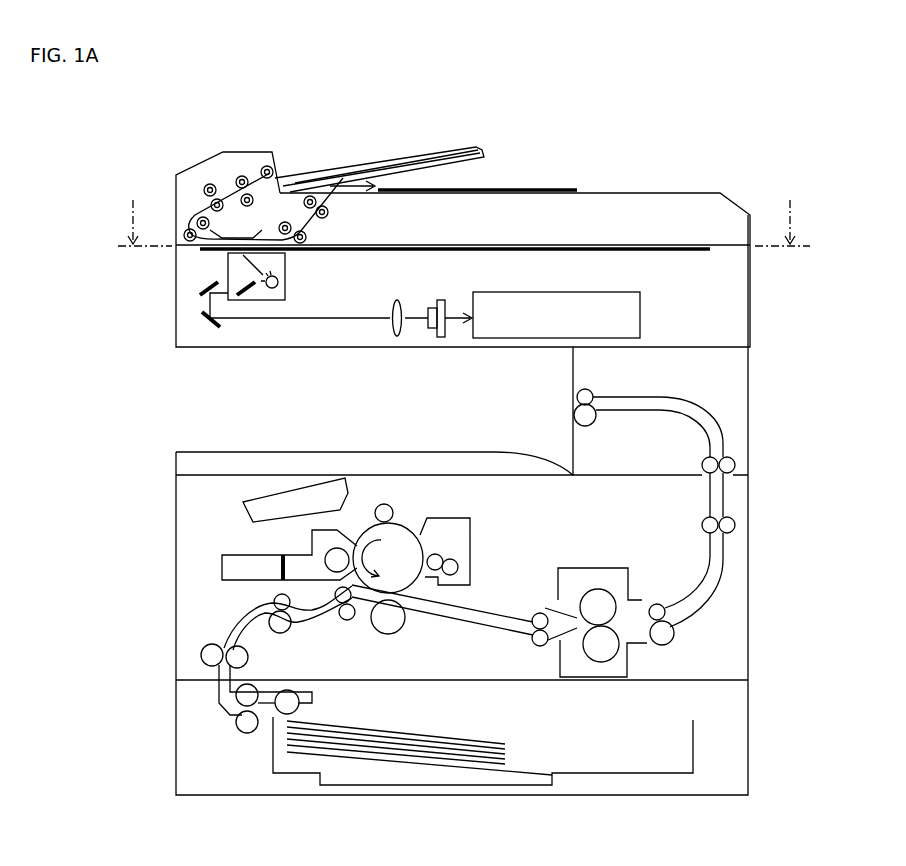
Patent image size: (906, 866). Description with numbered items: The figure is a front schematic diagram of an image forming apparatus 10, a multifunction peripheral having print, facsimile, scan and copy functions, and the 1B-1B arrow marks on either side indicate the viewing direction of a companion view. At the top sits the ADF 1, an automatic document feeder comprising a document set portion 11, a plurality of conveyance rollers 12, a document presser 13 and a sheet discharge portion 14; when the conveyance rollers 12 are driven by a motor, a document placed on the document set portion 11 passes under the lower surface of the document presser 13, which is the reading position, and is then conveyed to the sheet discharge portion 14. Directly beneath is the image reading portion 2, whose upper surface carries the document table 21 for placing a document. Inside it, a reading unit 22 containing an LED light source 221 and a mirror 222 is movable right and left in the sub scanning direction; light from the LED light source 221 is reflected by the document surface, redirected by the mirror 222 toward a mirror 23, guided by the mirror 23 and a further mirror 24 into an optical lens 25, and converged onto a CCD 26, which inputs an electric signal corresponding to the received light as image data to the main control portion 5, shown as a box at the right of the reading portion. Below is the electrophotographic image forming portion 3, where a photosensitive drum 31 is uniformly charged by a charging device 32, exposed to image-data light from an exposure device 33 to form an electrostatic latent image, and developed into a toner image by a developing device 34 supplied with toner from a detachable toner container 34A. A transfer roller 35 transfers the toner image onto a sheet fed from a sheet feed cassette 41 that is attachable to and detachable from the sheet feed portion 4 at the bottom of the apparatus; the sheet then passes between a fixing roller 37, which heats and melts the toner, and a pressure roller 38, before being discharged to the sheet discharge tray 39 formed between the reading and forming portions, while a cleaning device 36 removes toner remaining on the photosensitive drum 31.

The image forming apparatus 10 is at (140, 130).
The ADF 1 is at (675, 193).
The 1B-1B arrow direction 1B is at (464, 210).
The document set portion 11 is at (312, 170).
The conveyance rollers 12 is at (211, 184).
The document presser 13 is at (236, 238).
The sheet discharge portion 14 is at (594, 194).
The image reading portion 2 is at (175, 310).
The document table 21 is at (432, 252).
The reading unit 22 is at (285, 290).
The LED light source 221 is at (279, 279).
The mirror 222 is at (250, 294).
The mirror 23 is at (208, 288).
The mirror 24 is at (208, 322).
The optical lens 25 is at (397, 337).
The CCD 26 is at (441, 338).
The main control portion 5 is at (500, 292).
The image forming portion 3 is at (194, 499).
The sheet discharge tray 39 is at (493, 453).
The photosensitive drum 31 is at (405, 524).
The charging device 32 is at (375, 513).
The exposure device 33 is at (243, 518).
The developing device 34 is at (312, 541).
The toner container 34A is at (236, 581).
The transfer roller 35 is at (392, 634).
The cleaning device 36 is at (455, 518).
The fixing roller 37 is at (628, 592).
The pressure roller 38 is at (590, 662).
The sheet feed portion 4 is at (175, 745).
The sheet feed cassette 41 is at (694, 755).